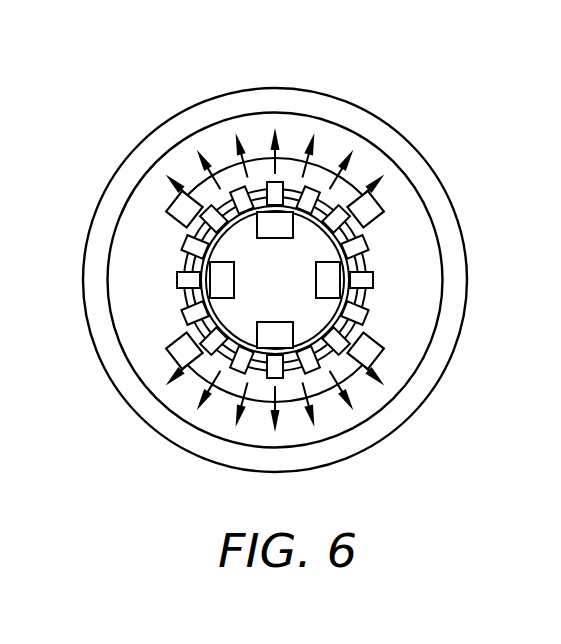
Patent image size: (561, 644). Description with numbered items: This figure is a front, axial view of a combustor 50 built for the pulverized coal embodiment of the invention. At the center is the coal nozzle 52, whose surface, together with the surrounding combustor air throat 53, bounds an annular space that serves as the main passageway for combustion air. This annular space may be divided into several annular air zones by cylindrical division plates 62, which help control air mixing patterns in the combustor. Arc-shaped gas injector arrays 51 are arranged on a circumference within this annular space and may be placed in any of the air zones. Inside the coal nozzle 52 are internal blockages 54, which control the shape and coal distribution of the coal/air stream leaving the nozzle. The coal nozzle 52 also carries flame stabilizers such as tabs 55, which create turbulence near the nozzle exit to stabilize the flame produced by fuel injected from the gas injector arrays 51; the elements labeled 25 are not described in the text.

The combustor 50 is at (380, 78).
The combustor air throat 53 is at (232, 92).
The cylindrical division plates 62 is at (183, 138).
The gas injector arrays 51 is at (355, 207).
The coal nozzle 52 is at (362, 258).
The tabs 55 is at (175, 280).
The internal blockages 54 is at (283, 238).
The sensor blocks 25 is at (175, 200).